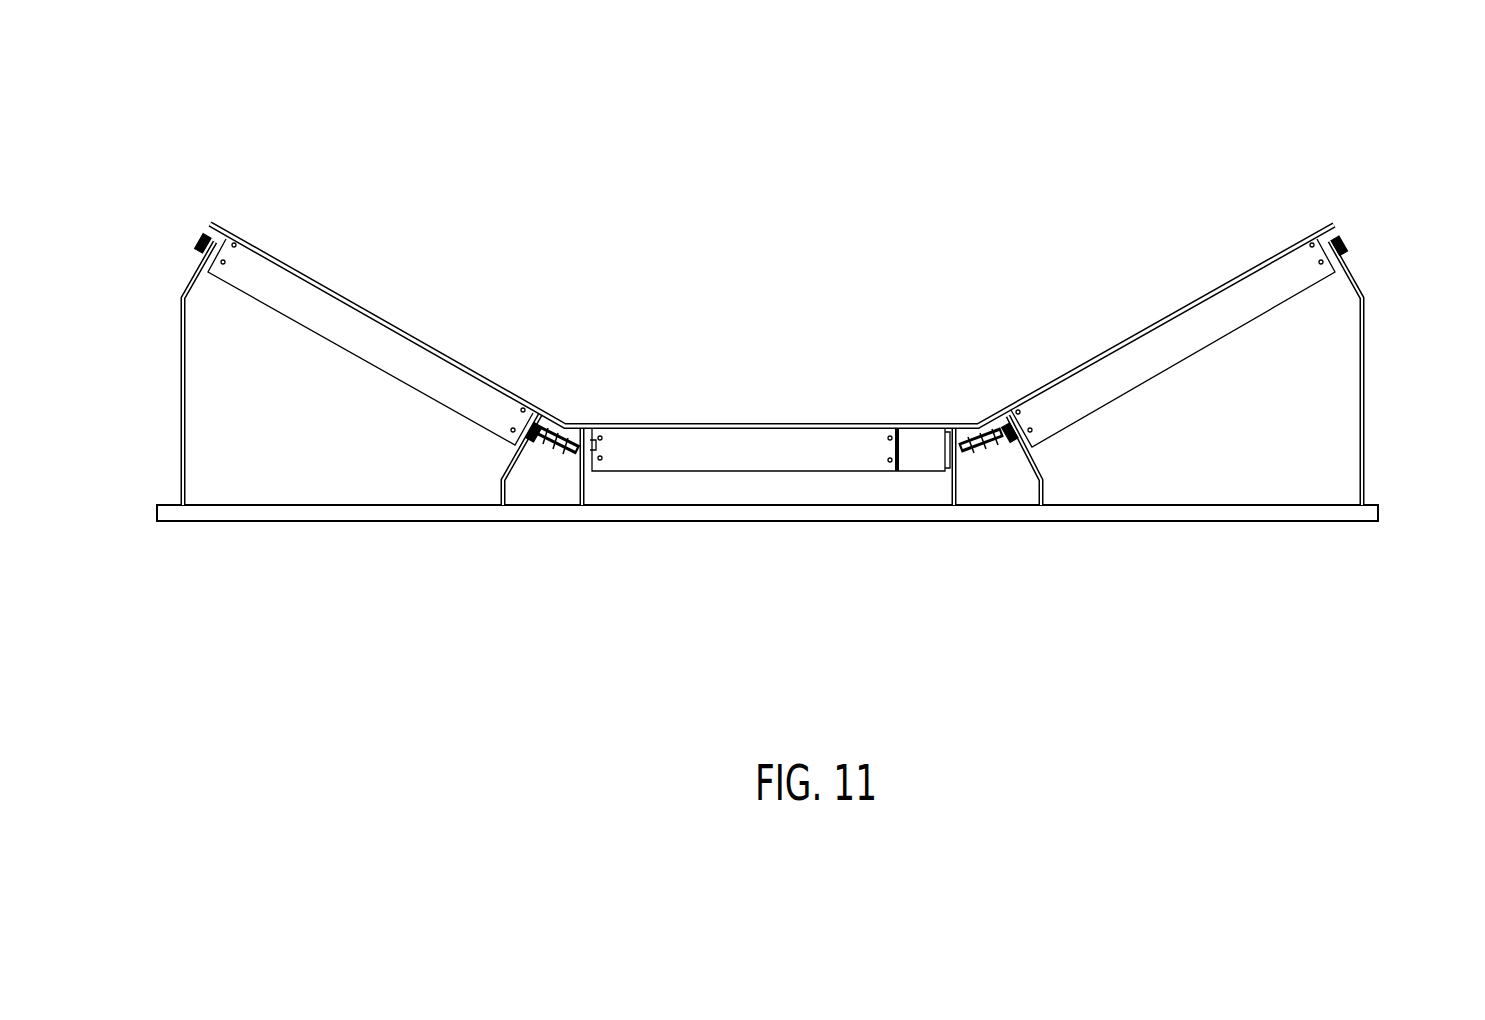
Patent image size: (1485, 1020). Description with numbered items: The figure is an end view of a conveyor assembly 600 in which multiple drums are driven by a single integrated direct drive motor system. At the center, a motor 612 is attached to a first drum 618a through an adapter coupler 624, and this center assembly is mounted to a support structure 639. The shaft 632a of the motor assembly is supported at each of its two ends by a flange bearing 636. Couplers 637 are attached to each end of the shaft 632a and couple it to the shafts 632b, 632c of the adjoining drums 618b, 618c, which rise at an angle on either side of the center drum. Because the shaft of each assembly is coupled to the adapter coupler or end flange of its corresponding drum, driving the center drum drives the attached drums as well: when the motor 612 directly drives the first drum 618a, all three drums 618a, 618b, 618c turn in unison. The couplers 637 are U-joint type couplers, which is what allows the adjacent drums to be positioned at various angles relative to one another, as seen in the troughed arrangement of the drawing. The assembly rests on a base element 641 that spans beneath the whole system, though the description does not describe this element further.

The conveyor assembly 600 is at (850, 150).
The motor 612 is at (935, 460).
The first drum 618a is at (790, 452).
The drum 618b is at (368, 348).
The drum 618c is at (1175, 350).
The adapter coupler 624 is at (895, 462).
The shaft 632a is at (962, 435).
The shaft 632b is at (188, 253).
The shaft 632c is at (1366, 250).
The flange bearing 636 is at (205, 238).
The coupler 637 is at (562, 458).
The support structure 639 is at (1363, 447).
The base plate 641 is at (1367, 515).